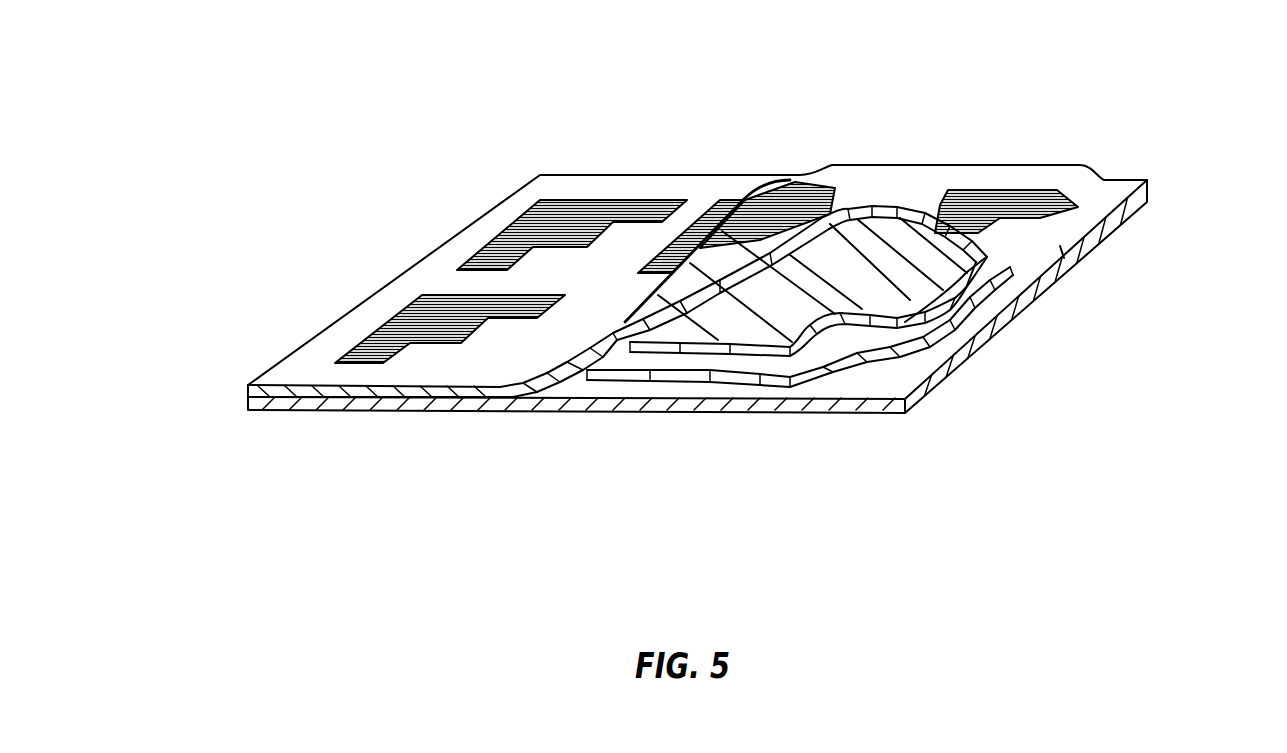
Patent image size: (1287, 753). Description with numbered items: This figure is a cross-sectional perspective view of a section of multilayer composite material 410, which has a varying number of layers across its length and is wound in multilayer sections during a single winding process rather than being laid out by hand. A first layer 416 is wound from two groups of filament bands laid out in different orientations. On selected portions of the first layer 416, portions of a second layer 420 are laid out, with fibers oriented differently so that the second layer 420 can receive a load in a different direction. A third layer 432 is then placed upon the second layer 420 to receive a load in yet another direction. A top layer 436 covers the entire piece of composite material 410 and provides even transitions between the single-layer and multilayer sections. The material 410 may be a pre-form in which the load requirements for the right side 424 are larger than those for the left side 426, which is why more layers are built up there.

The multilayer composite material 410 is at (710, 282).
The first layer 416 is at (270, 400).
The second layer 420 is at (815, 353).
The right side 424 is at (1080, 270).
The left side 426 is at (420, 280).
The third layer 432 is at (925, 248).
The top layer 436 is at (638, 175).